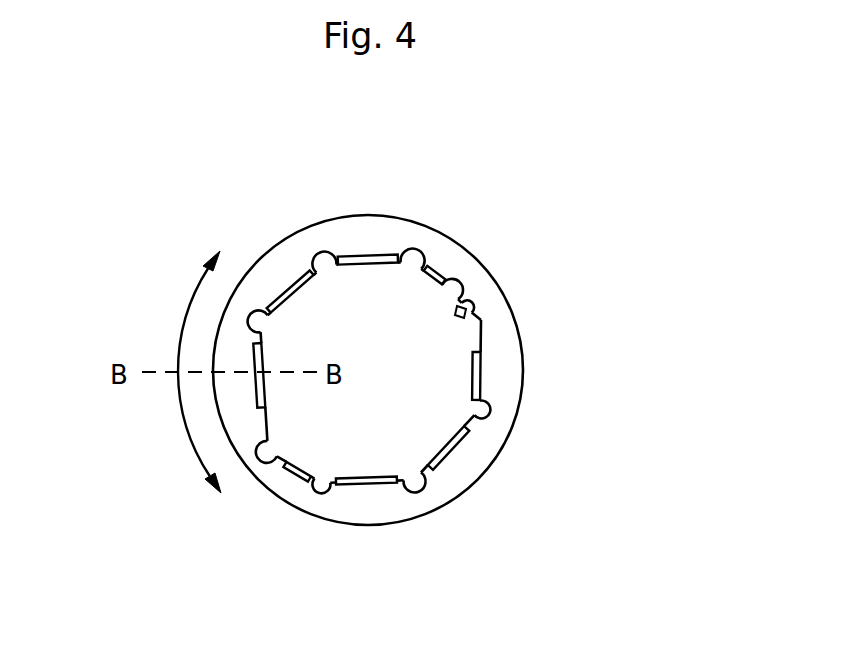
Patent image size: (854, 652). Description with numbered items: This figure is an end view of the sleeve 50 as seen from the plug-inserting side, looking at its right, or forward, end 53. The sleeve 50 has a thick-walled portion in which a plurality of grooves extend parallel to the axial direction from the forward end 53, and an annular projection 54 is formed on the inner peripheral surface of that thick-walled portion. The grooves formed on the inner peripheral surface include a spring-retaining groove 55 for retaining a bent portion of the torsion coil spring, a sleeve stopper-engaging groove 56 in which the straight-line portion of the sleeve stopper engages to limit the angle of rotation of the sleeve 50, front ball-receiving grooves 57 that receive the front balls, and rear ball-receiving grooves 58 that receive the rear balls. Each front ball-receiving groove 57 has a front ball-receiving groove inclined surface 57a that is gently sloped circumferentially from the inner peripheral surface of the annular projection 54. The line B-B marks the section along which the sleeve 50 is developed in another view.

The sleeve 50 is at (284, 195).
The right (forward) end 53 is at (367, 237).
The annular projection 54 is at (282, 293).
The spring-retaining groove 55 is at (267, 463).
The sleeve stopper-engaging groove 56 is at (481, 317).
The front ball-receiving groove 57 is at (483, 320).
The front ball-receiving groove inclined surface 57a is at (478, 352).
The rear ball-receiving groove 58 is at (330, 255).